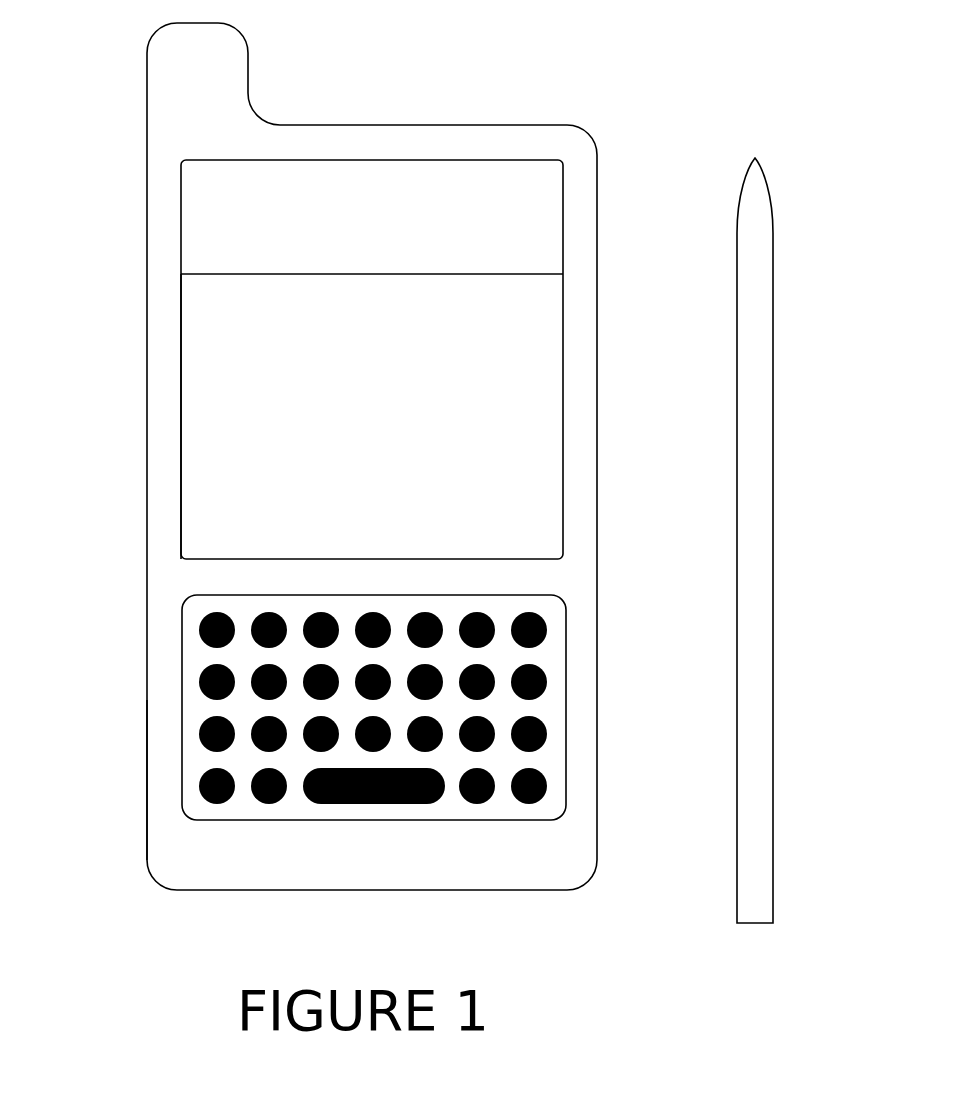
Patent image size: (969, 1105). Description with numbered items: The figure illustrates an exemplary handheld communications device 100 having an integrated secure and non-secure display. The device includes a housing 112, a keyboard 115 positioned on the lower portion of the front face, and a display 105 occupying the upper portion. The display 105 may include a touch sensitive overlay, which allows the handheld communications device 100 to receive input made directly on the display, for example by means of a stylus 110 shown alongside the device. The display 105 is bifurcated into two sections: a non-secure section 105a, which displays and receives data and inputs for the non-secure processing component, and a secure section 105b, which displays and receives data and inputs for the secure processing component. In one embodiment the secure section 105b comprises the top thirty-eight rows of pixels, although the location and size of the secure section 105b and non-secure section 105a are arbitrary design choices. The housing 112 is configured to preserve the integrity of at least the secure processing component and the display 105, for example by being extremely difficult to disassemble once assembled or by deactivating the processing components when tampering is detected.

The handheld communications device 100 is at (372, 480).
The display 105 is at (563, 507).
The non-secure section 105a is at (181, 465).
The secure section 105b is at (181, 230).
The stylus 110 is at (773, 438).
The housing 112 is at (139, 813).
The keyboard 115 is at (566, 768).